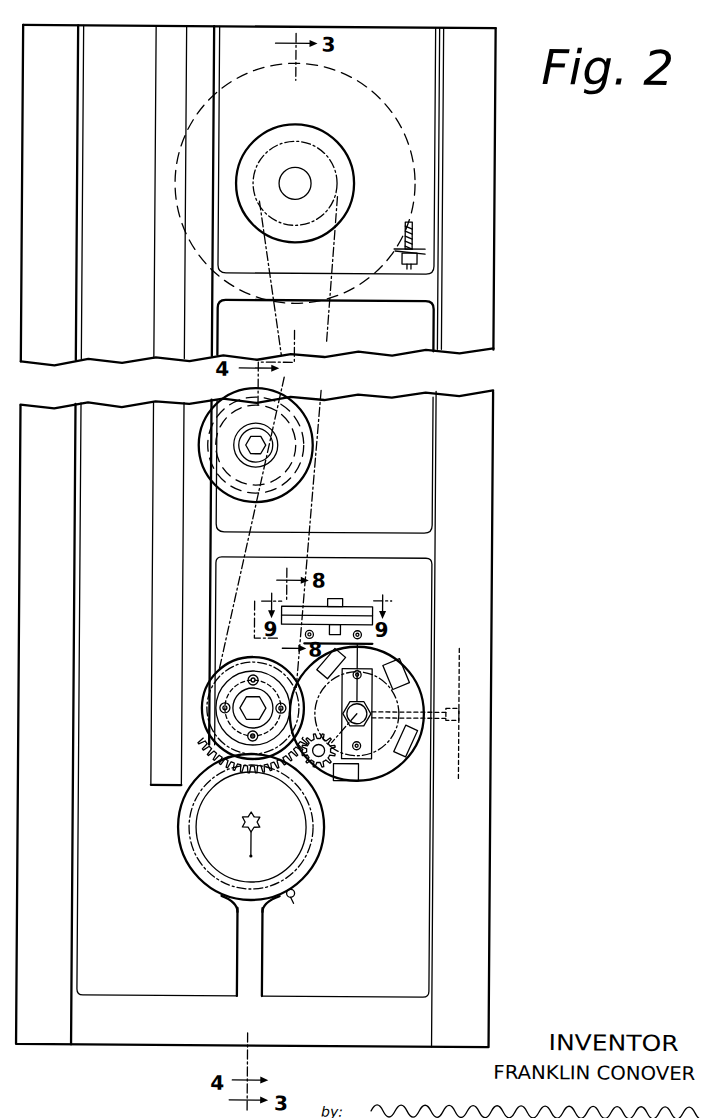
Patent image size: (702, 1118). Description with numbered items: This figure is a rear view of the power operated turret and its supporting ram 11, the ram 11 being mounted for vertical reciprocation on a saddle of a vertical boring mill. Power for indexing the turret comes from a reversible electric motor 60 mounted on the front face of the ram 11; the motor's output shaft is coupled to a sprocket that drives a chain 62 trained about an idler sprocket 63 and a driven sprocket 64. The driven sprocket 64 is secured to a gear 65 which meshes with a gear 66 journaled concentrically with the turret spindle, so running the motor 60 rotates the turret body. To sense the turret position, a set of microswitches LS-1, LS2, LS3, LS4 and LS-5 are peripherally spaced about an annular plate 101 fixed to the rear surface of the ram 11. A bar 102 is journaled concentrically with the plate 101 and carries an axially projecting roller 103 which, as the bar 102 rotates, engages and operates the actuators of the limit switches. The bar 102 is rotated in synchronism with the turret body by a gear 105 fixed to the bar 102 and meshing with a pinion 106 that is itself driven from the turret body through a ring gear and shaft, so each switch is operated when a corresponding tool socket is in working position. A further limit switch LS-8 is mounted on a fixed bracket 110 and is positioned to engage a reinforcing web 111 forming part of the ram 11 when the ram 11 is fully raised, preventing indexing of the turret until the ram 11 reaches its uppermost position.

The ram 11 is at (475, 496).
The reversible electric motor 60 is at (376, 90).
The chain 62 is at (316, 519).
The idler sprocket 63 is at (216, 452).
The driven sprocket 64 is at (205, 706).
The gear 65 is at (215, 751).
The gear 66 is at (197, 812).
The annular plate 101 is at (420, 700).
The bar 102 is at (366, 758).
The roller 103 is at (361, 670).
The gear 105 is at (381, 746).
The pinion 106 is at (307, 772).
The fixed bracket 110 is at (412, 232).
The reinforcing web 111 is at (387, 303).
The limit switch LS-1 is at (352, 655).
The limit switch LS2 is at (261, 815).
The limit switch LS3 is at (347, 780).
The limit switch LS4 is at (401, 757).
The limit switch LS-5 is at (402, 668).
The limit switch LS-8 is at (417, 256).